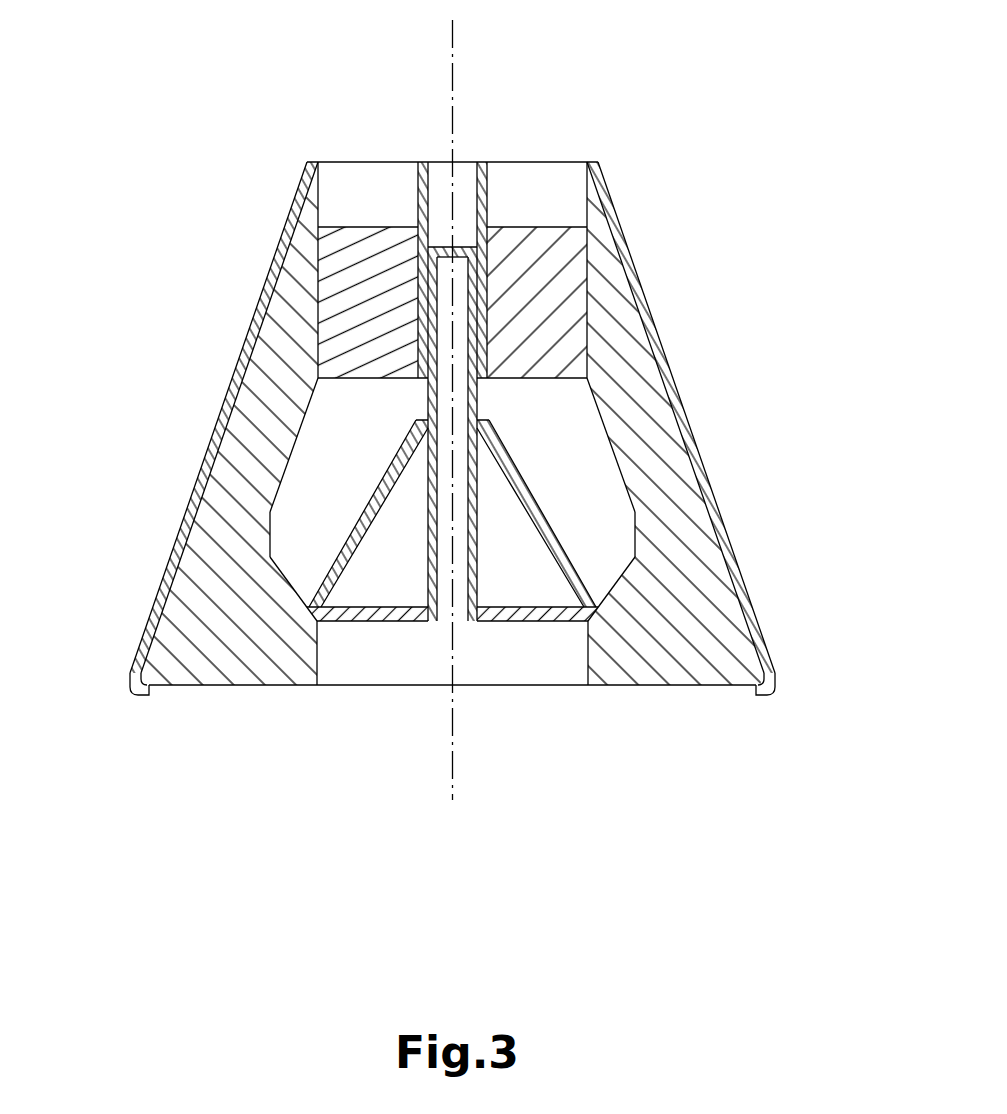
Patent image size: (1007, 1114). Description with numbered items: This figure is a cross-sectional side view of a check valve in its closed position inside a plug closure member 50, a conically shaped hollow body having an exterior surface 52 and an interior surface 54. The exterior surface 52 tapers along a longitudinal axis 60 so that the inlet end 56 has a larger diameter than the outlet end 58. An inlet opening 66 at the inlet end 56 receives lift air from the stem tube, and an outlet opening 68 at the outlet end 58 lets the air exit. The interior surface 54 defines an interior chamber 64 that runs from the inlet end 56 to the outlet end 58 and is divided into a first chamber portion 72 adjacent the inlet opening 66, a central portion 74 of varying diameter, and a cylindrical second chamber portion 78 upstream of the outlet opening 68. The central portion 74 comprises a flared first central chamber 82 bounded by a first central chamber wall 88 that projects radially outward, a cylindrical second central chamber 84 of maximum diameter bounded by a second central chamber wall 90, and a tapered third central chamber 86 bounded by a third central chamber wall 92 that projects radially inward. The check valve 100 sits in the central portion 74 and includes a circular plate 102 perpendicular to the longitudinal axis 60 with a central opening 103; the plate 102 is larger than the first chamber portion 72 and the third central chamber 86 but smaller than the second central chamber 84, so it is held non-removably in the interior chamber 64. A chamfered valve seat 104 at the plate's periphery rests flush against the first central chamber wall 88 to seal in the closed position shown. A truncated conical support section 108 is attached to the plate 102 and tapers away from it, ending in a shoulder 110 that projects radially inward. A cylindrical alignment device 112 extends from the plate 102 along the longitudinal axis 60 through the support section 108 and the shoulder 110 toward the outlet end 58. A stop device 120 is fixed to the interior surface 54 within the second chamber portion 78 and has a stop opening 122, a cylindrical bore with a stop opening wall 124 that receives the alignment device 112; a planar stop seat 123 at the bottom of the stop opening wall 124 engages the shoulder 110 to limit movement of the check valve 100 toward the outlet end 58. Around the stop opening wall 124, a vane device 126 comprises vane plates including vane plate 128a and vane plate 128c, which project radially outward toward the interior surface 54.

The plug closure member 50 is at (622, 227).
The exterior surface 52 is at (652, 276).
The interior surface 54 is at (603, 446).
The inlet end 56 is at (300, 695).
The outlet end 58 is at (328, 134).
The longitudinal axis 60 is at (456, 40).
The interior chamber 64 is at (372, 187).
The inlet opening 66 is at (542, 687).
The outlet opening 68 is at (534, 162).
The first chamber portion 72 is at (378, 657).
The central portion 74 is at (335, 435).
The second chamber portion 78 is at (327, 212).
The first central chamber 82 is at (304, 568).
The second central chamber 84 is at (310, 511).
The third central chamber 86 is at (329, 467).
The first central chamber wall 88 is at (290, 583).
The second central chamber wall 90 is at (267, 518).
The third central chamber wall 92 is at (301, 425).
The check valve 100 is at (478, 497).
The plate 102 is at (543, 606).
The opening 103 is at (462, 637).
The valve seat 104 is at (598, 617).
The support section 108 is at (566, 553).
The shoulder 110 is at (481, 422).
The alignment device 112 is at (578, 518).
The stop device 120 is at (499, 165).
The stop opening 122 is at (438, 128).
The stop seat 123 is at (417, 386).
The stop opening wall 124 is at (473, 158).
The vane device 126 is at (553, 215).
The vane plate 128a is at (560, 327).
The vane plate 128c is at (350, 332).